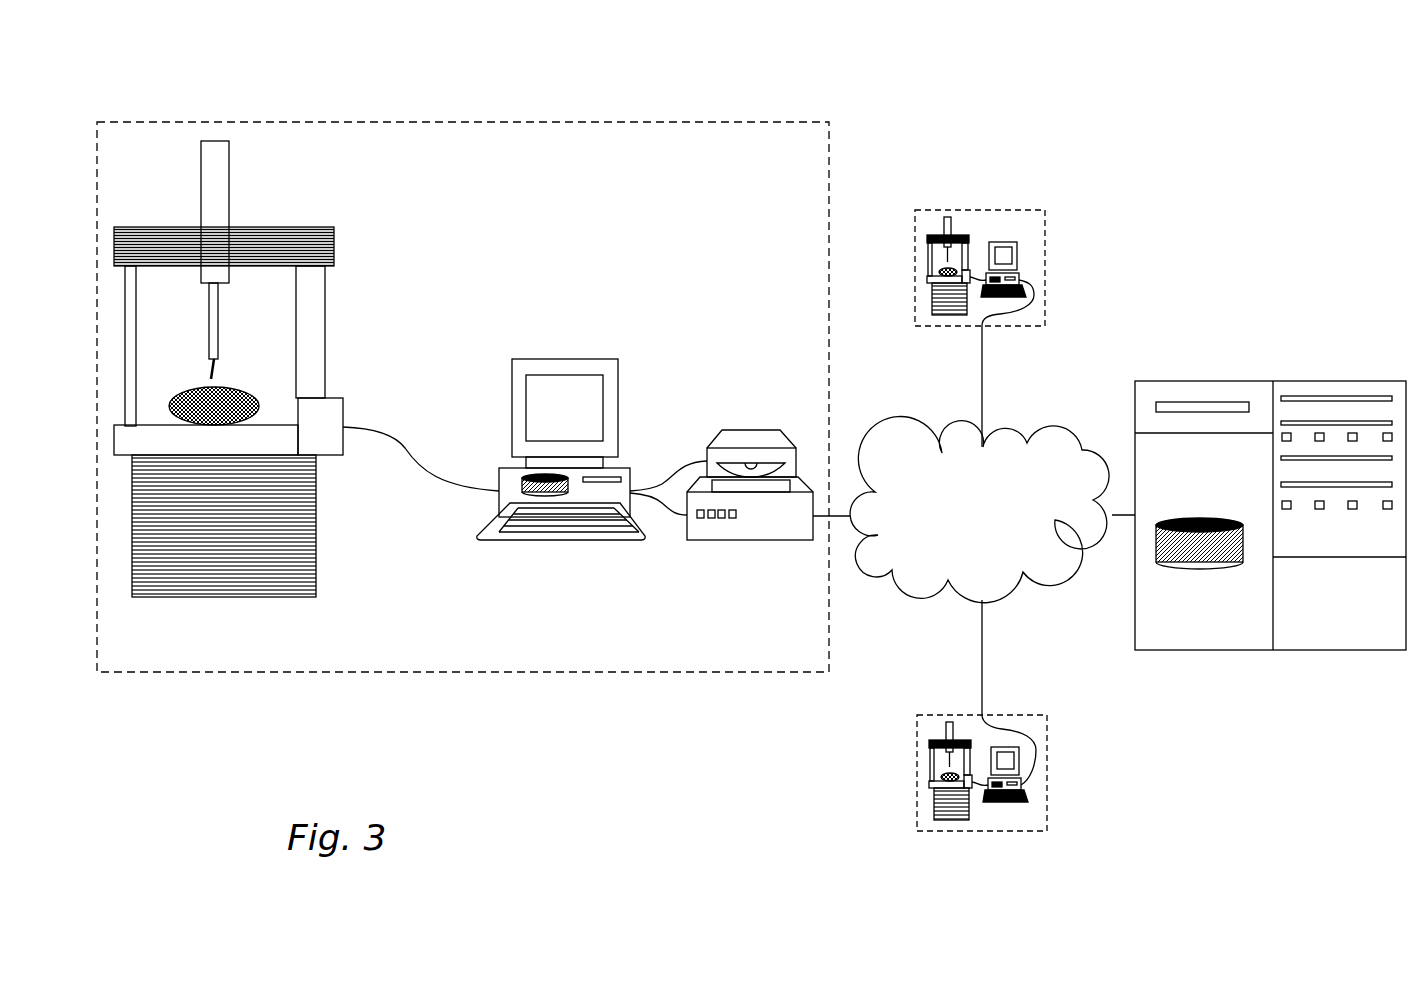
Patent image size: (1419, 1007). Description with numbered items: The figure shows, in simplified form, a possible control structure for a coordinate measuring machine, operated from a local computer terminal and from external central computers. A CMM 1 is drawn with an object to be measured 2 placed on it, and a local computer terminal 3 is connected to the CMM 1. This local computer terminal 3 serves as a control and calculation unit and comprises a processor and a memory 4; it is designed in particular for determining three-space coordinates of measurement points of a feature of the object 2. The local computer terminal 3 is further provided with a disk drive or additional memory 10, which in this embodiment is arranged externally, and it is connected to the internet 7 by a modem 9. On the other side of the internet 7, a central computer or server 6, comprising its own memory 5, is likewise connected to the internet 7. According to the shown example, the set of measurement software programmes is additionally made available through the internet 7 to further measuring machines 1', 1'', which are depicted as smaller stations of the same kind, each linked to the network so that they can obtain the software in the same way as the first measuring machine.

The CMM 1 is at (463, 356).
The further measuring machine 1' is at (1035, 248).
The further measuring machine 1'' is at (1087, 773).
The object to be measured 2 is at (230, 416).
The local computer terminal 3 is at (553, 337).
The memory 4 is at (522, 490).
The memory 5 is at (1203, 553).
The central computer or server 6 is at (1275, 370).
The internet 7 is at (900, 612).
The modem 9 is at (750, 525).
The disk drive or additional memory 10 is at (735, 437).